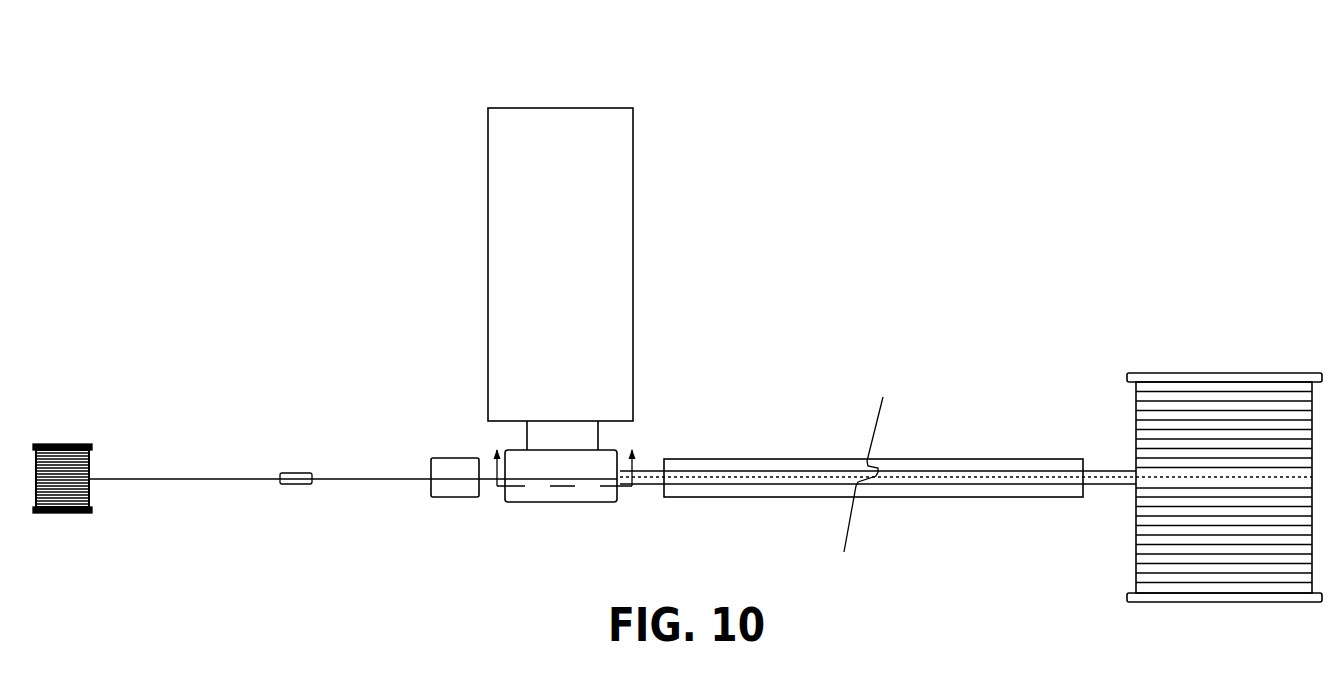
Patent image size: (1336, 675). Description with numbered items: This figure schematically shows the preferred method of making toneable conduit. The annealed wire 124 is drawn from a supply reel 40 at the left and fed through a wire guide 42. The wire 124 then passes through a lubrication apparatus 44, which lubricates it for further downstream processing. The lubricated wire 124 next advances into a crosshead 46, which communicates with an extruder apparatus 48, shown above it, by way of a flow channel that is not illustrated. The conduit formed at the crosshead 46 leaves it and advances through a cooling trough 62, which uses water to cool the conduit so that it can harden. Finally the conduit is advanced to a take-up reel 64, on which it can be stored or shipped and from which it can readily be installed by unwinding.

The supply reel 40 is at (92, 486).
The annealed wire 124 is at (156, 478).
The wire guide 42 is at (313, 488).
The lubrication apparatus 44 is at (470, 457).
The crosshead 46 is at (585, 505).
The extruder apparatus 48 is at (559, 106).
The cooling trough 62 is at (820, 455).
The take-up reel 64 is at (1278, 370).